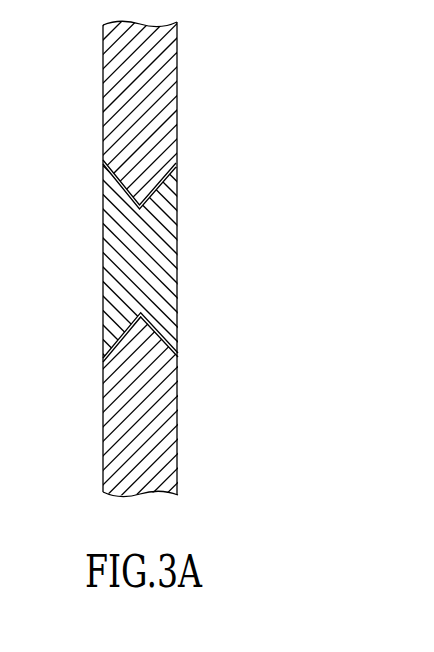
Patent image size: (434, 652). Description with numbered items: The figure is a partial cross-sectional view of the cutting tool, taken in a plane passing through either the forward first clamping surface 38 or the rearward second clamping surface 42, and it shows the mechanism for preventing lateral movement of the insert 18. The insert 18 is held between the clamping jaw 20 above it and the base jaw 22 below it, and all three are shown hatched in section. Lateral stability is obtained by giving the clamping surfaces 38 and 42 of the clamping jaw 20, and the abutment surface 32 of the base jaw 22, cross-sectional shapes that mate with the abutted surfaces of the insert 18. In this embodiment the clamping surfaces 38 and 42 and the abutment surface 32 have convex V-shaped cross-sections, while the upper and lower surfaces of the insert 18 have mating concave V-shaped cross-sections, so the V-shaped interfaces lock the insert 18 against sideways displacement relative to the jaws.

The insert 18 is at (155, 263).
The clamping jaw 20 is at (155, 93).
The base jaw 22 is at (153, 423).
The abutment surface 32 is at (130, 326).
The first clamping surface 38 is at (225, 187).
The second clamping surface 42 is at (162, 194).